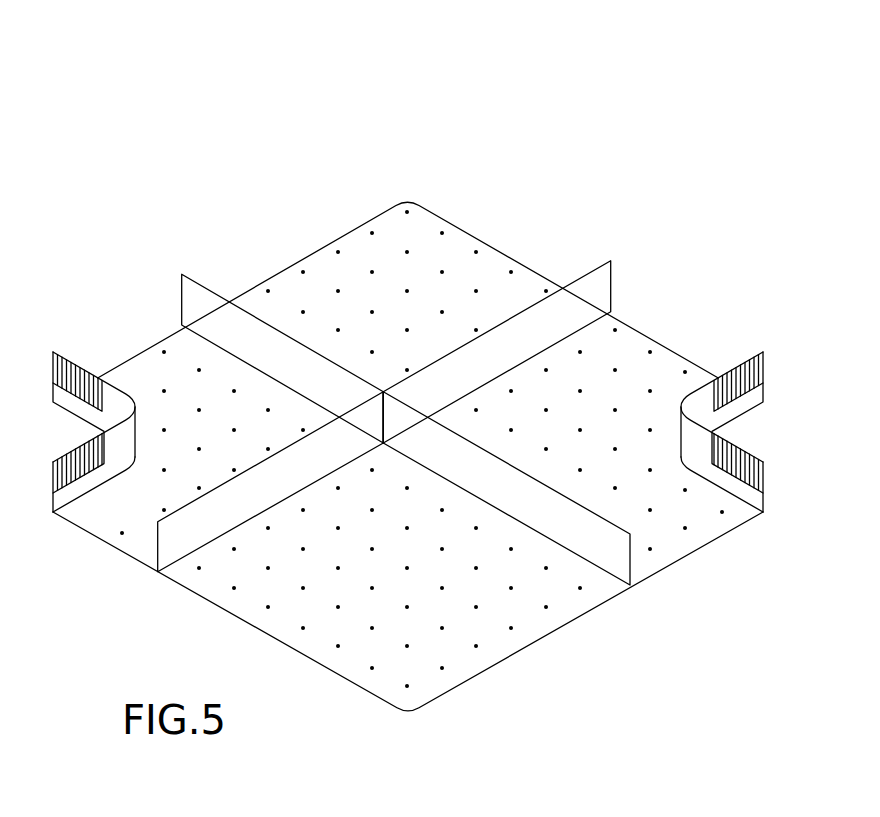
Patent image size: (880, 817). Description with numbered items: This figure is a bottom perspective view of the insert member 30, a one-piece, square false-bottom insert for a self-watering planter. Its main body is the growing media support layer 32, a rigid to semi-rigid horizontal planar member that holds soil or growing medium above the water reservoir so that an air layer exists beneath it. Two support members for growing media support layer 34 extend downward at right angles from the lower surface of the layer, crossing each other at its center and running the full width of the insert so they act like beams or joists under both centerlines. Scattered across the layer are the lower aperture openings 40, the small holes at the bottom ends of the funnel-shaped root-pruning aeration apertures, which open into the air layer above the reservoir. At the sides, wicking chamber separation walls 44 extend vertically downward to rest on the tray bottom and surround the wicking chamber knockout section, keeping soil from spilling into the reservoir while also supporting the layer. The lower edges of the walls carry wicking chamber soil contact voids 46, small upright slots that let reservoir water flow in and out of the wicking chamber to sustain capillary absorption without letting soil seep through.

The insert member 30 is at (422, 152).
The growing media support layer 32 is at (498, 255).
The support member for growing media support layer 34 is at (192, 312).
The lower aperture opening 40 is at (443, 232).
The wicking chamber separation wall 44 is at (115, 463).
The wicking chamber soil contact void 46 is at (60, 353).